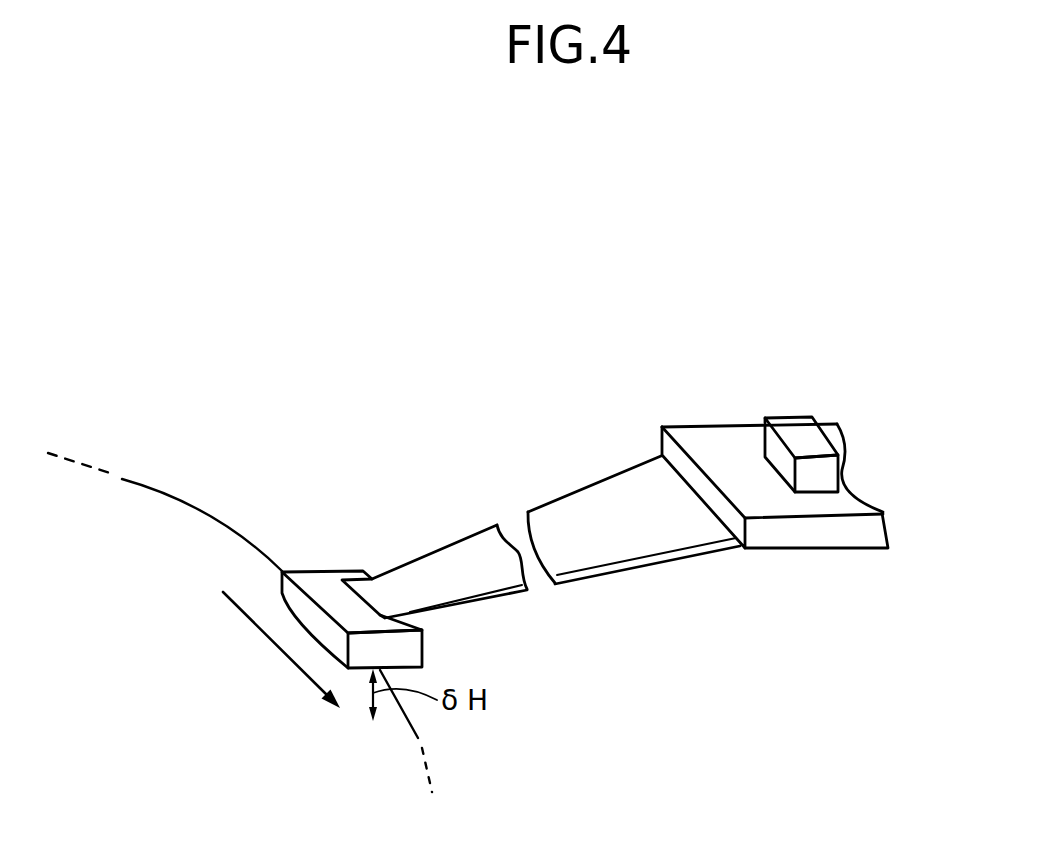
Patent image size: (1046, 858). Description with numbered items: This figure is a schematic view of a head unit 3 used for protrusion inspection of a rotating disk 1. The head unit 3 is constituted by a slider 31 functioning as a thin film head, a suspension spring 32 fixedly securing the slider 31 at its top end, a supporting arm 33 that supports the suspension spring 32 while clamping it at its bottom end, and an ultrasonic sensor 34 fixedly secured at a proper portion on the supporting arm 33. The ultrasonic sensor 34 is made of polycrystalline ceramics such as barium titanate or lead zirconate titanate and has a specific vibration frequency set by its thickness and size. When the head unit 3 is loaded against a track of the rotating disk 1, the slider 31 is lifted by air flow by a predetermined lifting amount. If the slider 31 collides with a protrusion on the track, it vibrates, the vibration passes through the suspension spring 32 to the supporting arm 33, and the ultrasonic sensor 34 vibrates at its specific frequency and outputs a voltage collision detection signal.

The rotating disk 1 is at (272, 718).
The head unit 3 is at (450, 382).
The slider 31 is at (322, 578).
The suspension spring 32 is at (473, 547).
The supporting arm 33 is at (705, 437).
The ultrasonic sensor 34 is at (788, 435).